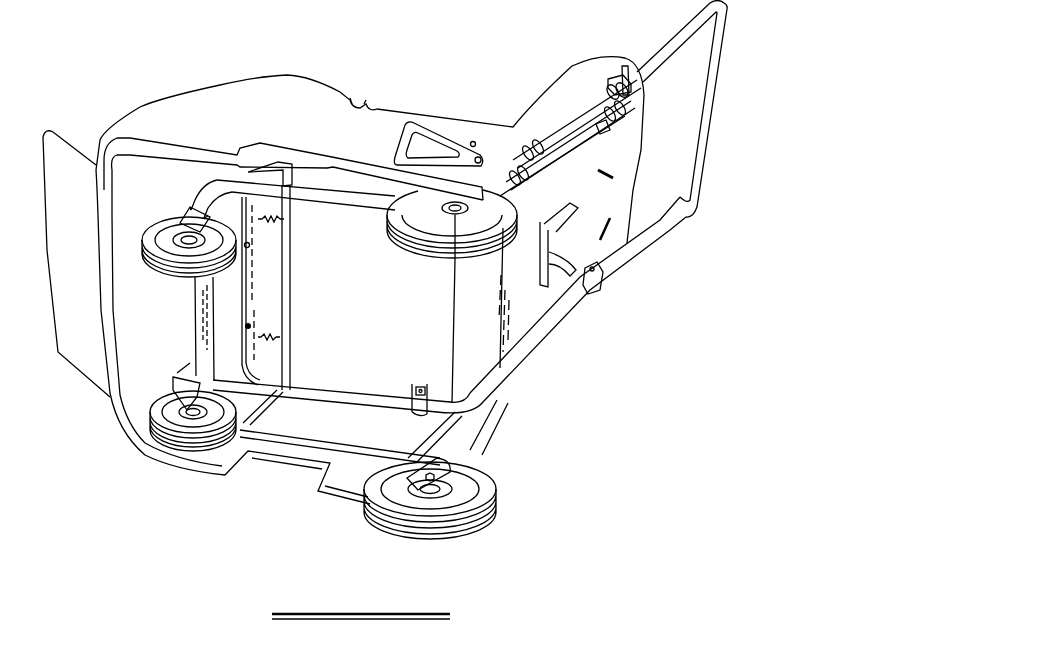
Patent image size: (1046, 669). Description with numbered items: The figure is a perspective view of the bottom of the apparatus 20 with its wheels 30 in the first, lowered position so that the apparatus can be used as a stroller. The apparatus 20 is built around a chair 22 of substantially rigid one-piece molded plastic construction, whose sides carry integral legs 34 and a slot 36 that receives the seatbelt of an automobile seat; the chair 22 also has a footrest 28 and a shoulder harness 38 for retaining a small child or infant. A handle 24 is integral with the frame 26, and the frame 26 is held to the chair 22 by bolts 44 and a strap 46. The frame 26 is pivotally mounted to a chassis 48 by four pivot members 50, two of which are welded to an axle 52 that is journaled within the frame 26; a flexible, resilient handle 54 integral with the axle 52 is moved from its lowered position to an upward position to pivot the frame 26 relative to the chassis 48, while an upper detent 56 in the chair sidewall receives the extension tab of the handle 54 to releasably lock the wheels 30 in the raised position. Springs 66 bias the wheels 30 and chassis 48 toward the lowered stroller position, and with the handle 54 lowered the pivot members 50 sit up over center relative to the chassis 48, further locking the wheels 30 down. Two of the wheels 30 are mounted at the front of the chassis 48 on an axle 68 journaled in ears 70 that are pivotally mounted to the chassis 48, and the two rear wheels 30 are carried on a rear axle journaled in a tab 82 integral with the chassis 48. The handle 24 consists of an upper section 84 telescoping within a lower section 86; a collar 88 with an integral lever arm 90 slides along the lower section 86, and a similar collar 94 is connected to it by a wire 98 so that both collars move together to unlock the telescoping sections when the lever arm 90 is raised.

The apparatus 20 is at (410, 80).
The chair 22 is at (538, 78).
The handle 24 is at (707, 108).
The frame 26 is at (330, 387).
The footrest 28 is at (78, 260).
The wheels 30 is at (152, 235).
The legs 34 is at (333, 491).
The slot 36 is at (347, 103).
The shoulder harness 38 is at (566, 238).
The bolts 44 is at (248, 326).
The strap 46 is at (603, 132).
The chassis 48 is at (347, 448).
The pivot members 50 is at (264, 166).
The axle 52 is at (455, 313).
The handle 54 is at (394, 150).
The upper detent 56 is at (477, 142).
The springs 66 is at (280, 220).
The axle 68 is at (180, 380).
The ears 70 is at (183, 212).
The tab 82 is at (410, 498).
The upper section 84 is at (690, 42).
The lower section 86 is at (552, 322).
The collar 88 is at (638, 100).
The lever arm 90 is at (627, 66).
The collar 94 is at (520, 182).
The wire 98 is at (575, 134).